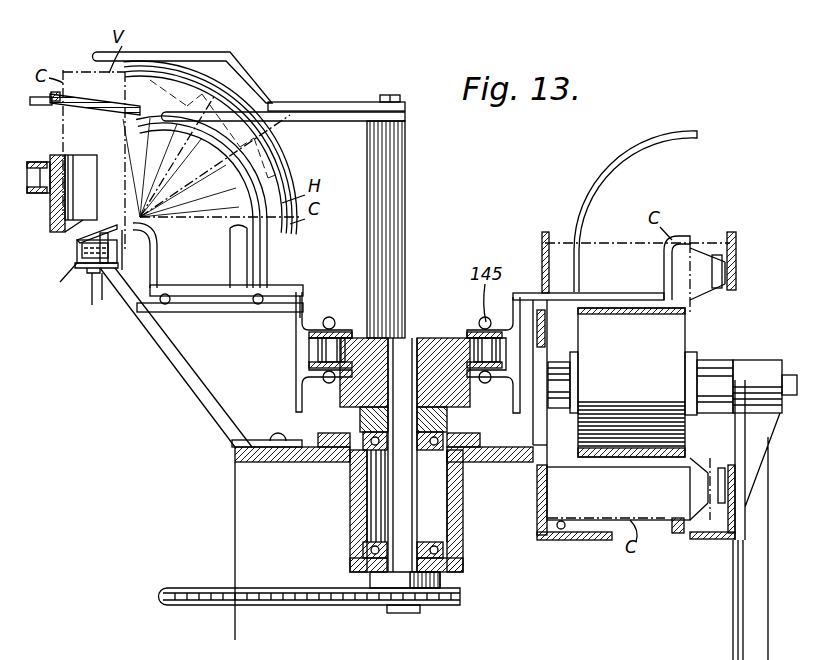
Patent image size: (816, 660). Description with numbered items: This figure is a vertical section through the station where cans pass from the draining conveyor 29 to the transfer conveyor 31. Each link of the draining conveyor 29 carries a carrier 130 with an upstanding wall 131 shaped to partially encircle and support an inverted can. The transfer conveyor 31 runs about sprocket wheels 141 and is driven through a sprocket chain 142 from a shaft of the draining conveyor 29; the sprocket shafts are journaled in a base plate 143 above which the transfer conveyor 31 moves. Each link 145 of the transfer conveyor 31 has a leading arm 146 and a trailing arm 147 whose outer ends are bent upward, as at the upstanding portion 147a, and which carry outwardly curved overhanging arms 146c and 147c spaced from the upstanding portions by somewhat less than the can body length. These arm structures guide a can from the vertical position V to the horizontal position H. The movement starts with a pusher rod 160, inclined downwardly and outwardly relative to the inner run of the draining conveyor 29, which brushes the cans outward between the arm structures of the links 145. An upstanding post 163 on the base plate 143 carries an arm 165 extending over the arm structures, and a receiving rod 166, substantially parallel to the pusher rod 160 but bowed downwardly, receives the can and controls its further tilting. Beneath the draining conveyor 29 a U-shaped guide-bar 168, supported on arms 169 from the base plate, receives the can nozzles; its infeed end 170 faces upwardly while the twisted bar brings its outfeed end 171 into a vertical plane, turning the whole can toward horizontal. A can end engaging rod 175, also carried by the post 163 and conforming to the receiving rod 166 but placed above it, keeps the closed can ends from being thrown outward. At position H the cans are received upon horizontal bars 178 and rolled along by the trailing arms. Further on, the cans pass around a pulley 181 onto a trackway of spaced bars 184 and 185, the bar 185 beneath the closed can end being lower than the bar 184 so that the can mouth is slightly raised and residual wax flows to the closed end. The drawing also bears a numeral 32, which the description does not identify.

The draining conveyor 29 is at (46, 160).
The transfer conveyor 31 is at (325, 325).
The motor 32 is at (652, 313).
The carrier 130 is at (72, 263).
The upstanding wall 131 is at (77, 246).
The sprocket wheels 141 is at (432, 340).
The sprocket chain 142 is at (205, 606).
The base plate 143 is at (310, 462).
The link 145 is at (320, 358).
The leading arm 146 is at (612, 293).
The overhanging arm 146c is at (656, 136).
The trailing arm 147 is at (215, 288).
The upstanding portion 147a is at (160, 238).
The overhanging arm 147c is at (275, 185).
The pusher rod 160 is at (96, 104).
The post 163 is at (395, 208).
The arm 165 is at (330, 108).
The receiving rod 166 is at (262, 168).
The guide-bar 168 is at (93, 268).
The arms 169 is at (178, 354).
The infeed end 170 is at (92, 295).
The outfeed end 171 is at (88, 225).
The can end engaging rod 175 is at (258, 128).
The horizontal bars 178 is at (190, 310).
The pulley 181 is at (672, 396).
The bar 184 is at (680, 541).
The bar 185 is at (568, 541).